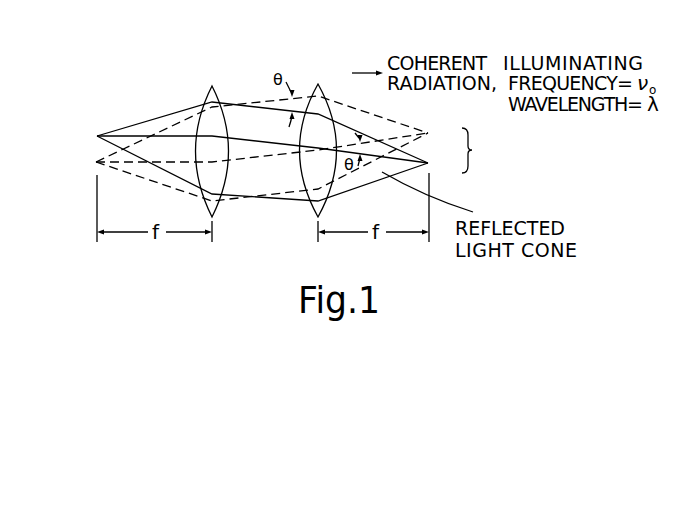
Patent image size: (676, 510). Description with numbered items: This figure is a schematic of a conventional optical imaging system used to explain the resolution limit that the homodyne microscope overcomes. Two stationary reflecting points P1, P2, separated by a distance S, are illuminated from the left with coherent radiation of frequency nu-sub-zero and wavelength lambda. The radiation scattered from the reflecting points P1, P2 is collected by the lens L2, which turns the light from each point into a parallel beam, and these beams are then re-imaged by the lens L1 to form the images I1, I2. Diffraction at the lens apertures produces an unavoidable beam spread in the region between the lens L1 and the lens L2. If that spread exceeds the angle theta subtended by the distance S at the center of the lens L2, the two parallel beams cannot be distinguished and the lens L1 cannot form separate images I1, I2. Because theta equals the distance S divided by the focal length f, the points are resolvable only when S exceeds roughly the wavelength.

The re-imaging lens L1 is at (212, 139).
The collecting lens L2 is at (318, 141).
The image of reflecting point P1 I1 is at (247, 148).
The image of reflecting point P2 I2 is at (246, 151).
The first stationary reflecting point P1 is at (442, 136).
The second stationary reflecting point P2 is at (442, 166).
The separation distance S is at (473, 150).